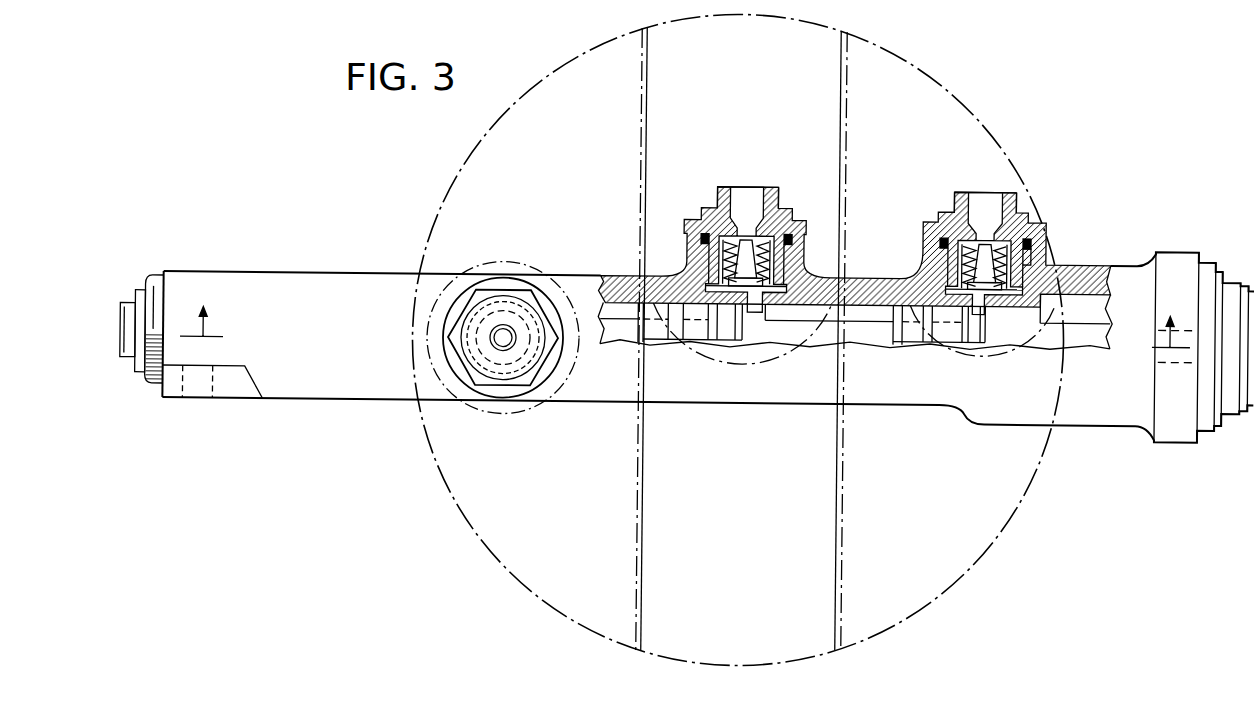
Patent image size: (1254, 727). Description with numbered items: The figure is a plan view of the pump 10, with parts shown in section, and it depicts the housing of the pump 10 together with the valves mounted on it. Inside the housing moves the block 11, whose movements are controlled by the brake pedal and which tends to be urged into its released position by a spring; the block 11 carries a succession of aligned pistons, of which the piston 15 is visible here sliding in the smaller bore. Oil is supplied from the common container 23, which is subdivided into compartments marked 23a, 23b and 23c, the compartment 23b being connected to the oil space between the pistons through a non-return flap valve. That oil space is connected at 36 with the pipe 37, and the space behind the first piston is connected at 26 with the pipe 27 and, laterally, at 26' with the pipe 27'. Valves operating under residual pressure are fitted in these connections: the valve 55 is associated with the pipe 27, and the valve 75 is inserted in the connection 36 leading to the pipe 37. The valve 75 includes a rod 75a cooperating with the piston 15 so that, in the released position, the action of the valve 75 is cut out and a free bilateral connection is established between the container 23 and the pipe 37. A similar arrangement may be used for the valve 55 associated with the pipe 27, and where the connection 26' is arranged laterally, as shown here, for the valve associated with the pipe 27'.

The pump 10 is at (331, 277).
The movable block 11 is at (857, 320).
The piston 15 is at (674, 333).
The container 23 is at (479, 142).
The section 23a is at (935, 118).
The compartment 23b is at (771, 121).
The section 23c is at (613, 123).
The connection 26 is at (957, 258).
The connection 26' is at (155, 308).
The pipe 27 is at (985, 187).
The pipe 27' is at (138, 355).
The connection 36 is at (800, 236).
The pipe 37 is at (752, 188).
The valve 55 is at (1032, 260).
The valve 75 is at (716, 260).
The rod 75a is at (768, 310).